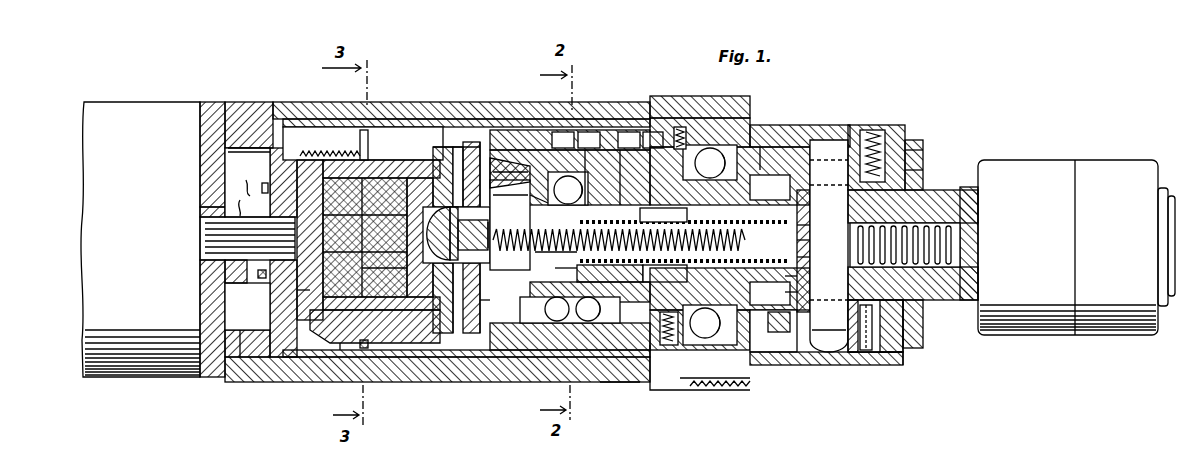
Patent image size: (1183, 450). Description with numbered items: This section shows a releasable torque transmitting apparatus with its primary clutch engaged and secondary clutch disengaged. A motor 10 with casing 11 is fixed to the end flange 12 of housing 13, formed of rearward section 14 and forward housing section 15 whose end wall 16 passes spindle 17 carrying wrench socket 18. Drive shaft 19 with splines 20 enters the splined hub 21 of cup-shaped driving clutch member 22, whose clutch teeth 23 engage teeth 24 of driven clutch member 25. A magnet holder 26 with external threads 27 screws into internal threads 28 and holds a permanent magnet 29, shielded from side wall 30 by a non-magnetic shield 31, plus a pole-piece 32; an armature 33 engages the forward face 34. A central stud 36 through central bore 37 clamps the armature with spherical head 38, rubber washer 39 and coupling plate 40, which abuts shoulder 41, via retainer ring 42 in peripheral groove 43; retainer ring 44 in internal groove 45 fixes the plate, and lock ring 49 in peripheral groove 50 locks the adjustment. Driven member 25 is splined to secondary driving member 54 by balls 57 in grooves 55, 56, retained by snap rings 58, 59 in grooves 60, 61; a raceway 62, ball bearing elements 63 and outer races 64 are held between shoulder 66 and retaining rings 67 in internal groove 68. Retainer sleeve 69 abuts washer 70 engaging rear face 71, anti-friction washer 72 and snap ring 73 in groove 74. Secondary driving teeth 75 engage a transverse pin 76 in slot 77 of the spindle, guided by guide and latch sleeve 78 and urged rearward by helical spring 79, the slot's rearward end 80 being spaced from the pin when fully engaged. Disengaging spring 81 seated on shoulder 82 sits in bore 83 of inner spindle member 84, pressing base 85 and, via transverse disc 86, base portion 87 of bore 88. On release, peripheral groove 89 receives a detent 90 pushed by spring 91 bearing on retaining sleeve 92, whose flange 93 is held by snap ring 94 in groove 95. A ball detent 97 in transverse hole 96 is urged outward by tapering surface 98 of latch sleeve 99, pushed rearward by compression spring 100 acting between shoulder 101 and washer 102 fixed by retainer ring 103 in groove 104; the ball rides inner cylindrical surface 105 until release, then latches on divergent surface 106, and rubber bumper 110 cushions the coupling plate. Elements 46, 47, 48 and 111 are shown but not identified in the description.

The drive spindle 10 is at (135, 102).
The spindle flange 11 is at (215, 102).
The housing end cap 12 is at (248, 112).
The pin 13 is at (384, 110).
The housing 14 is at (525, 110).
The housing extension 15 is at (814, 125).
The end flange 16 is at (918, 340).
The output shaft 17 is at (945, 300).
The tool holder 18 is at (1105, 170).
The splined drive shaft 19 is at (205, 232).
The spring 20 is at (238, 200).
The retaining ring 21 is at (240, 270).
The housing wall 22 is at (300, 360).
The sleeve 23 is at (435, 140).
The liner 24 is at (390, 121).
The housing section 25 is at (621, 150).
The piston cup 26 is at (322, 170).
The piston flange 27 is at (345, 160).
The lower piston wall 28 is at (325, 345).
The elastomer block 29 is at (325, 210).
The piston bottom 30 is at (350, 296).
The valve body 31 is at (412, 330).
The elastomer section 32 is at (407, 197).
The valve sleeve 33 is at (445, 333).
The valve plate 34 is at (447, 120).
The clutch housing 36 is at (493, 204).
The elastomer section 37 is at (412, 262).
The elastomer section 38 is at (407, 218).
The valve seat 39 is at (482, 285).
The valve head 40 is at (462, 300).
The valve disc 41 is at (482, 140).
The valve stem 42 is at (488, 262).
The stem collar 43 is at (488, 252).
The lower valve sleeve 44 is at (458, 340).
The upper valve sleeve 45 is at (466, 140).
The passage 46 is at (300, 294).
The elastomer section 47 is at (325, 248).
The elastomer section 48 is at (407, 244).
The seal 49 is at (366, 350).
The port 50 is at (345, 345).
The clutch body 54 is at (643, 180).
The ball 55 is at (553, 322).
The ball race 56 is at (632, 310).
The ball 57 is at (588, 322).
The cage segment 58 is at (629, 141).
The ball 59 is at (560, 175).
The lower race 60 is at (620, 333).
The seat 61 is at (485, 312).
The ball 62 is at (740, 340).
The nut 63 is at (692, 383).
The detent ball 64 is at (715, 110).
The threads 66 is at (725, 388).
The spring 67 is at (662, 340).
The housing end 68 is at (665, 380).
The housing wall 69 is at (614, 375).
The bore 70 is at (258, 358).
The gasket 71 is at (268, 152).
The stop 72 is at (262, 178).
The spring 73 is at (239, 180).
The seal ring 74 is at (258, 276).
The bore 75 is at (776, 172).
The housing wall 76 is at (828, 352).
The collar 77 is at (800, 276).
The plunger 78 is at (840, 312).
The spring 79 is at (952, 243).
The plunger head 80 is at (822, 190).
The spring seat 81 is at (532, 255).
The passage 82 is at (493, 218).
The rod 83 is at (682, 272).
The washer 84 is at (806, 255).
The compression spring 85 is at (745, 240).
The recess 86 is at (770, 187).
The plate 87 is at (806, 212).
The recess 88 is at (730, 289).
The pin 89 is at (866, 305).
The detent pin 90 is at (860, 160).
The detent spring 91 is at (872, 128).
The cap 92 is at (895, 366).
The nut 93 is at (913, 142).
The washer 94 is at (921, 150).
The shoulder 95 is at (921, 168).
The cage segment 96 is at (588, 141).
The cage segment 97 is at (563, 141).
The passage 98 is at (535, 203).
The cage segment 99 is at (653, 141).
The spring 100 is at (683, 214).
The spring seat 101 is at (565, 268).
The collar 102 is at (800, 290).
The washer 103 is at (806, 228).
The washer 104 is at (806, 242).
The bore 105 is at (586, 150).
The cam surface 106 is at (518, 163).
The cam 110 is at (496, 180).
The passage 111 is at (575, 216).